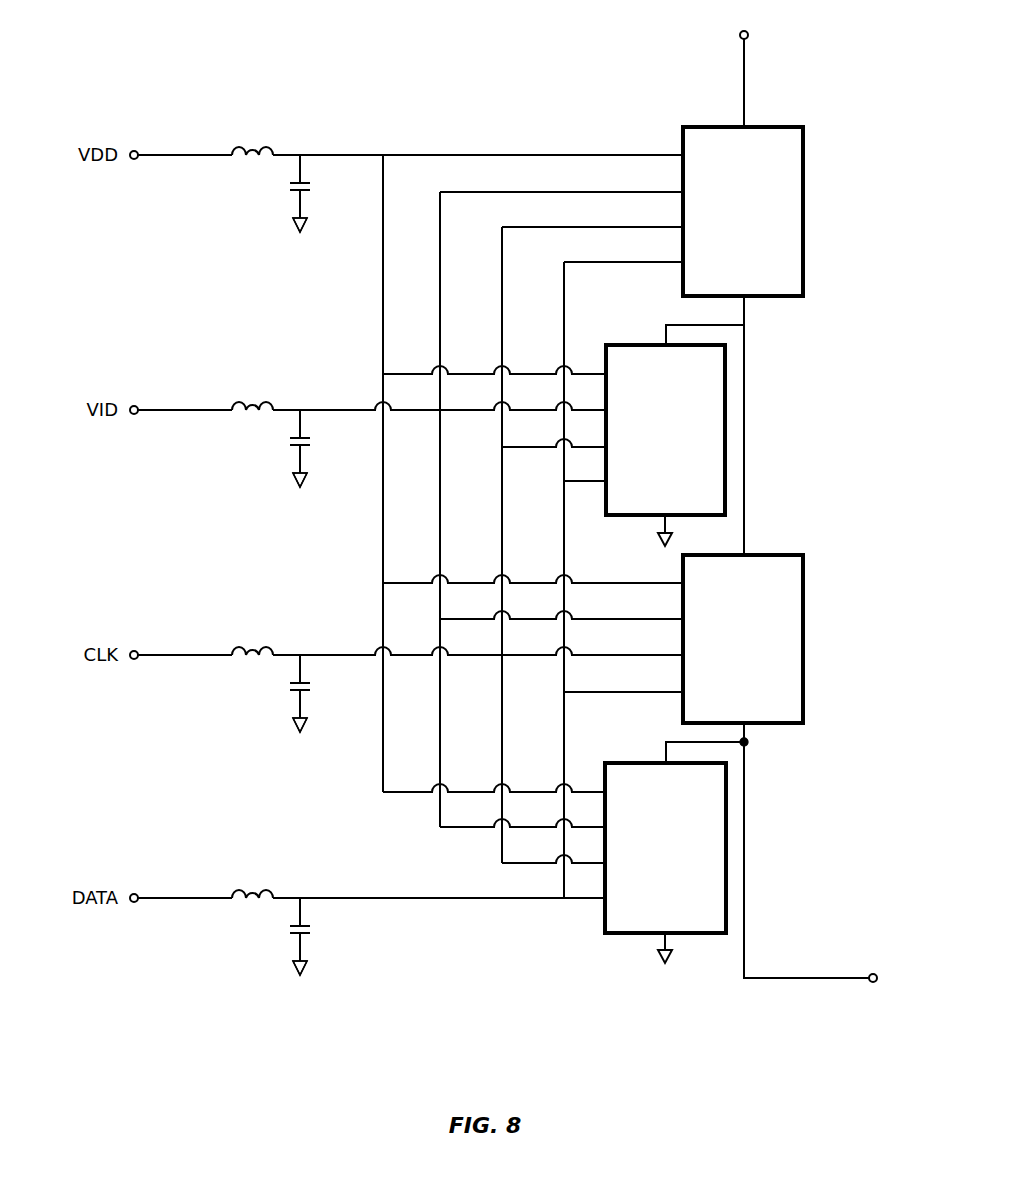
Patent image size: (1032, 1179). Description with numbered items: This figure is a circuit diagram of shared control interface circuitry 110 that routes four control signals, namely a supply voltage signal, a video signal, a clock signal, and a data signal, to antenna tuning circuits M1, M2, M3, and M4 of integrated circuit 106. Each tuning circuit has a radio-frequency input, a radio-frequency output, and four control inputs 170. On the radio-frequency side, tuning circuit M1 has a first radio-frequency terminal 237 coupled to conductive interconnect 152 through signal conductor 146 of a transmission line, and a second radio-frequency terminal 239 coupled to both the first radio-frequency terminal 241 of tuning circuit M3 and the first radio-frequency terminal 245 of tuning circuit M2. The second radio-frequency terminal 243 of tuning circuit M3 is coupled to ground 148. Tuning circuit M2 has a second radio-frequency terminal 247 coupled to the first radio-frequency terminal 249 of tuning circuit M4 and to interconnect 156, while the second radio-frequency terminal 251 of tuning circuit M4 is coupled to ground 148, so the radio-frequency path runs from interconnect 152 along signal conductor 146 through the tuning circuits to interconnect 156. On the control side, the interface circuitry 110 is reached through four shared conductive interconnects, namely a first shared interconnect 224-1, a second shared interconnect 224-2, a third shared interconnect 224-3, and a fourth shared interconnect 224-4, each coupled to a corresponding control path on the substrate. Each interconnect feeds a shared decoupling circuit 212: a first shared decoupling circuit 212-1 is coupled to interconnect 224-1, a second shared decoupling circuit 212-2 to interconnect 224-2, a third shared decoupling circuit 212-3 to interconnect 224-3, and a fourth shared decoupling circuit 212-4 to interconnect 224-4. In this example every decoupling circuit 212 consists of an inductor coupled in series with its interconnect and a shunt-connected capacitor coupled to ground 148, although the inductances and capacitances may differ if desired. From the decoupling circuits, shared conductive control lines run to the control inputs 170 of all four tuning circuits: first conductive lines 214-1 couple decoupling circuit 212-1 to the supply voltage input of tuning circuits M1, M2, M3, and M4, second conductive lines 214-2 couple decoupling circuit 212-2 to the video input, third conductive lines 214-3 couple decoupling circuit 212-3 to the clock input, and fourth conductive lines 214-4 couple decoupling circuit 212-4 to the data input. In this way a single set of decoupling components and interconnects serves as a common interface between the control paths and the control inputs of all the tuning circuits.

The integrated circuit 106 is at (564, 66).
The shared control interface circuitry 110 is at (598, 1026).
The signal conductor 146 is at (745, 70).
The ground 148 is at (298, 227).
The conductive interconnect 152 is at (750, 35).
The interconnect 156 is at (873, 983).
The module input pins 170 is at (743, 152).
The shared decoupling circuit 212 is at (227, 986).
The first shared decoupling circuit 212-1 is at (237, 115).
The second shared decoupling circuit 212-2 is at (237, 370).
The third shared decoupling circuit 212-3 is at (237, 615).
The fourth shared decoupling circuit 212-4 is at (237, 858).
The first conductive lines 214-1 is at (333, 153).
The second conductive lines 214-2 is at (333, 408).
The third conductive lines 214-3 is at (333, 653).
The fourth conductive lines 214-4 is at (333, 896).
The first shared interconnect 224-1 is at (134, 160).
The second shared interconnect 224-2 is at (134, 415).
The third shared interconnect 224-3 is at (134, 660).
The fourth shared interconnect 224-4 is at (134, 903).
The first radio-frequency terminal 237 is at (748, 125).
The second radio-frequency terminal 239 is at (745, 300).
The first radio-frequency terminal 241 is at (664, 340).
The second radio-frequency terminal 243 is at (668, 518).
The first radio-frequency terminal 245 is at (746, 553).
The second radio-frequency terminal 247 is at (748, 728).
The first radio-frequency terminal 249 is at (660, 746).
The second radio-frequency terminal 251 is at (667, 938).
The tuning circuit M1 is at (803, 190).
The tuning circuit M2 is at (803, 620).
The tuning circuit M3 is at (725, 415).
The tuning circuit M4 is at (726, 853).